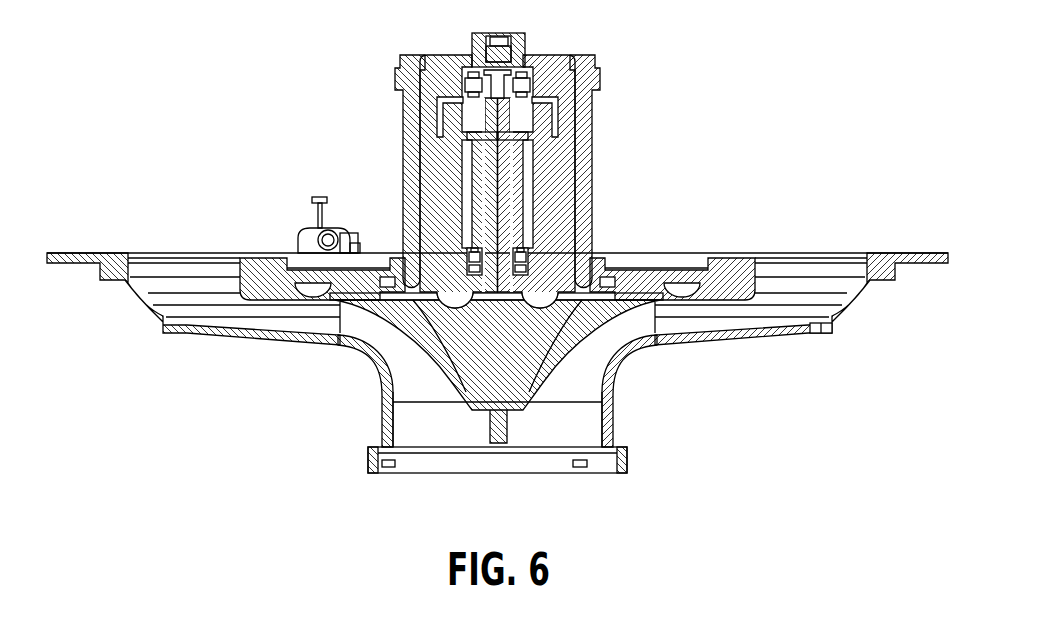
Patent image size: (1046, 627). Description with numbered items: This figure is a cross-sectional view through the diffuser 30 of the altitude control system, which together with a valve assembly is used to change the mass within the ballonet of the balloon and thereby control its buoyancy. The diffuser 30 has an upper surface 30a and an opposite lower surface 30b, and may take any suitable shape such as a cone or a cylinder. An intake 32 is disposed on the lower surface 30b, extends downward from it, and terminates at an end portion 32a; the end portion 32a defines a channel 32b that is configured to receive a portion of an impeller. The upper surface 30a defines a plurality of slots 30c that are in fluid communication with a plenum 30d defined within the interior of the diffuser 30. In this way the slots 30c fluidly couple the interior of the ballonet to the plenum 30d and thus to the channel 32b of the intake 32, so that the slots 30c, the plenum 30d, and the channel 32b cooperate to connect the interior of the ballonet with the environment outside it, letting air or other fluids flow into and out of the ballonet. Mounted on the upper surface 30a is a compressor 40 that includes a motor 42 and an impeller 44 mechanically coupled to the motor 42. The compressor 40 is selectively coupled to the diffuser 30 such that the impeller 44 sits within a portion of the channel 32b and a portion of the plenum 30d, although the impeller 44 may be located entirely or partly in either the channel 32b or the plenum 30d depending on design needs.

The diffuser 30 is at (502, 266).
The upper surface 30a is at (893, 253).
The lower surface 30b is at (822, 335).
The plurality of slots 30c is at (193, 265).
The plenum 30d is at (215, 290).
The intake 32 is at (481, 427).
The end portion 32a is at (621, 474).
The channel 32b is at (471, 456).
The compressor 40 is at (553, 170).
The motor 42 is at (395, 78).
The impeller 44 is at (562, 348).